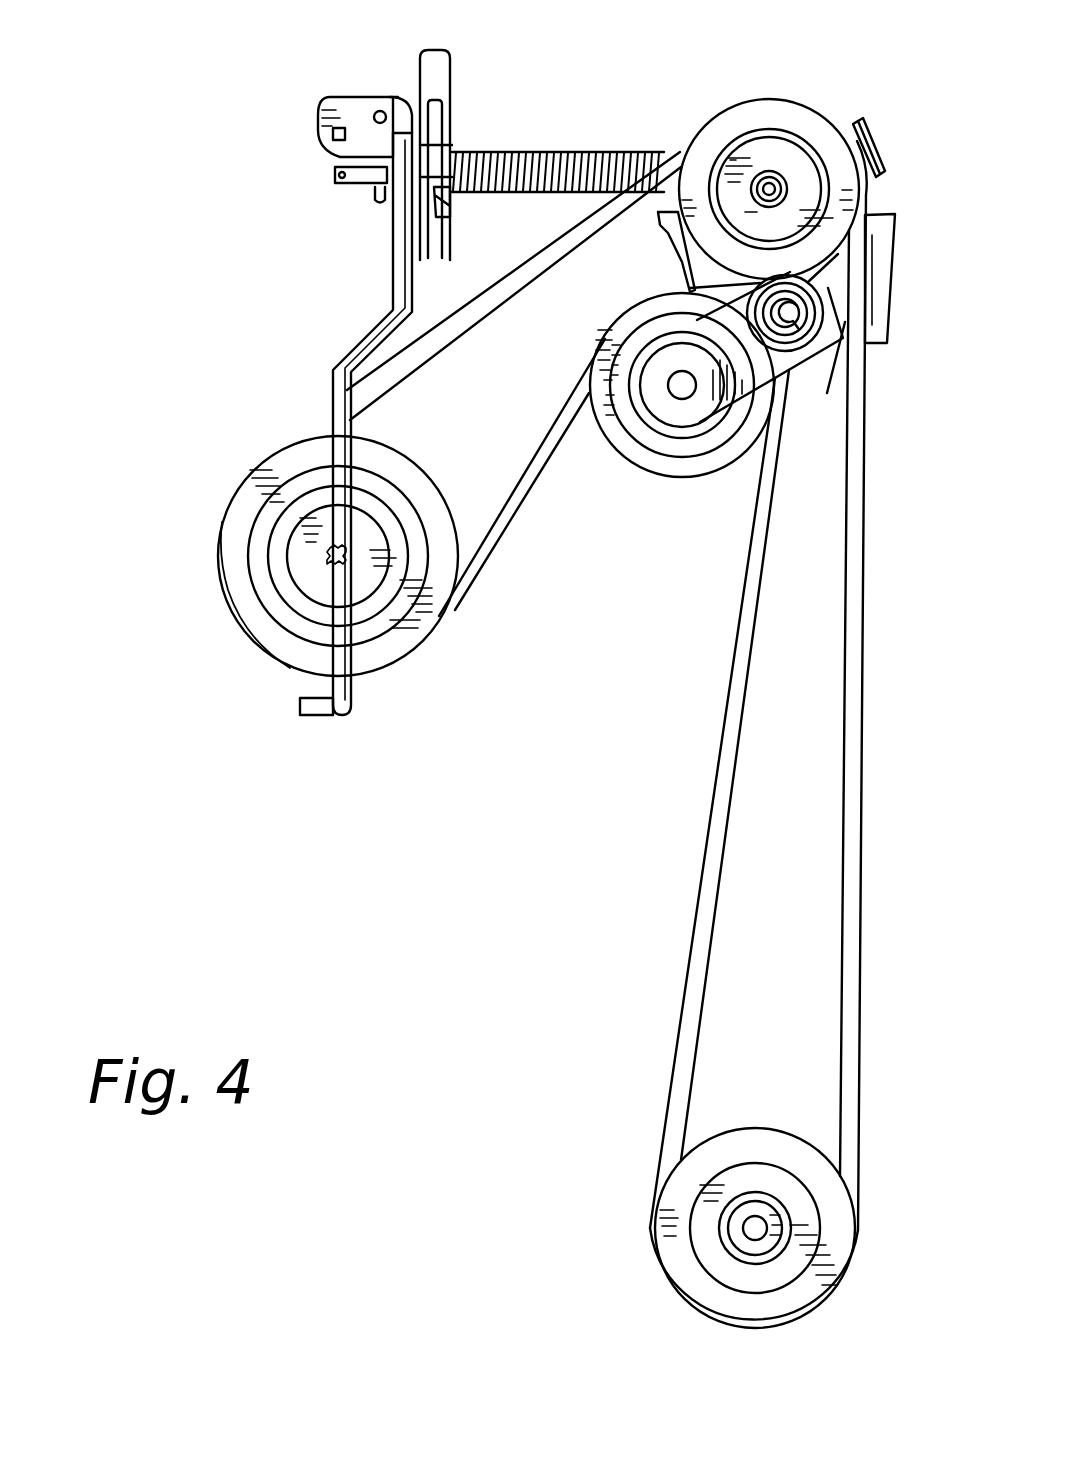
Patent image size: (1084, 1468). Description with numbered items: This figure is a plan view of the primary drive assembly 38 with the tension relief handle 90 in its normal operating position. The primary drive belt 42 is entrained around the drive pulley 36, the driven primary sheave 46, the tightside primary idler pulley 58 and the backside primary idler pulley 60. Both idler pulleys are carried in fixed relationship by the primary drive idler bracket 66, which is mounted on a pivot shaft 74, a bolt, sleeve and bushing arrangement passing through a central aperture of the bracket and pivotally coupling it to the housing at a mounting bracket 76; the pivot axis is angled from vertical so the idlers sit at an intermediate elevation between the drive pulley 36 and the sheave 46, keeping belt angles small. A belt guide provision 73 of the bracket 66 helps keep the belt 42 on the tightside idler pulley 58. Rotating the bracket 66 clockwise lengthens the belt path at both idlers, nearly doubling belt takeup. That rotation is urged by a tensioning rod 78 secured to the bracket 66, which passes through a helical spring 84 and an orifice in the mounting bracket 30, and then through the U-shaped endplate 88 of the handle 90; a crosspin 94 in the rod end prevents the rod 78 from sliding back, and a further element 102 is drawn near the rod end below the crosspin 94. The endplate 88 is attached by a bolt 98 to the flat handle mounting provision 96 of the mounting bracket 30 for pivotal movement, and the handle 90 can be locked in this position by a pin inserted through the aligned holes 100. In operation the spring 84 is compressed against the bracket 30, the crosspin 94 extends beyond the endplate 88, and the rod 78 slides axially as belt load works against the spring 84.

The mounting bracket 30 is at (450, 77).
The drive pulley 36 is at (675, 1190).
The primary drive assembly 38 is at (363, 511).
The primary drive belt 42 is at (688, 980).
The driven primary sheave 46 is at (338, 588).
The tightside primary idler pulley 58 is at (762, 103).
The backside primary idler pulley 60 is at (640, 460).
The primary drive idler bracket 66 is at (765, 365).
The belt guide provision 73 is at (877, 122).
The pivot shaft 74 is at (792, 320).
The mounting bracket 76 is at (685, 250).
The tensioning rod 78 is at (450, 223).
The helical spring 84 is at (583, 150).
The endplate 88 is at (337, 100).
The tension relief handle 90 is at (330, 370).
The crosspin 94 is at (338, 175).
The handle mounting provision 96 is at (400, 97).
The bolt 98 is at (333, 134).
The aligned holes 100 is at (375, 115).
The tab 102 is at (377, 197).